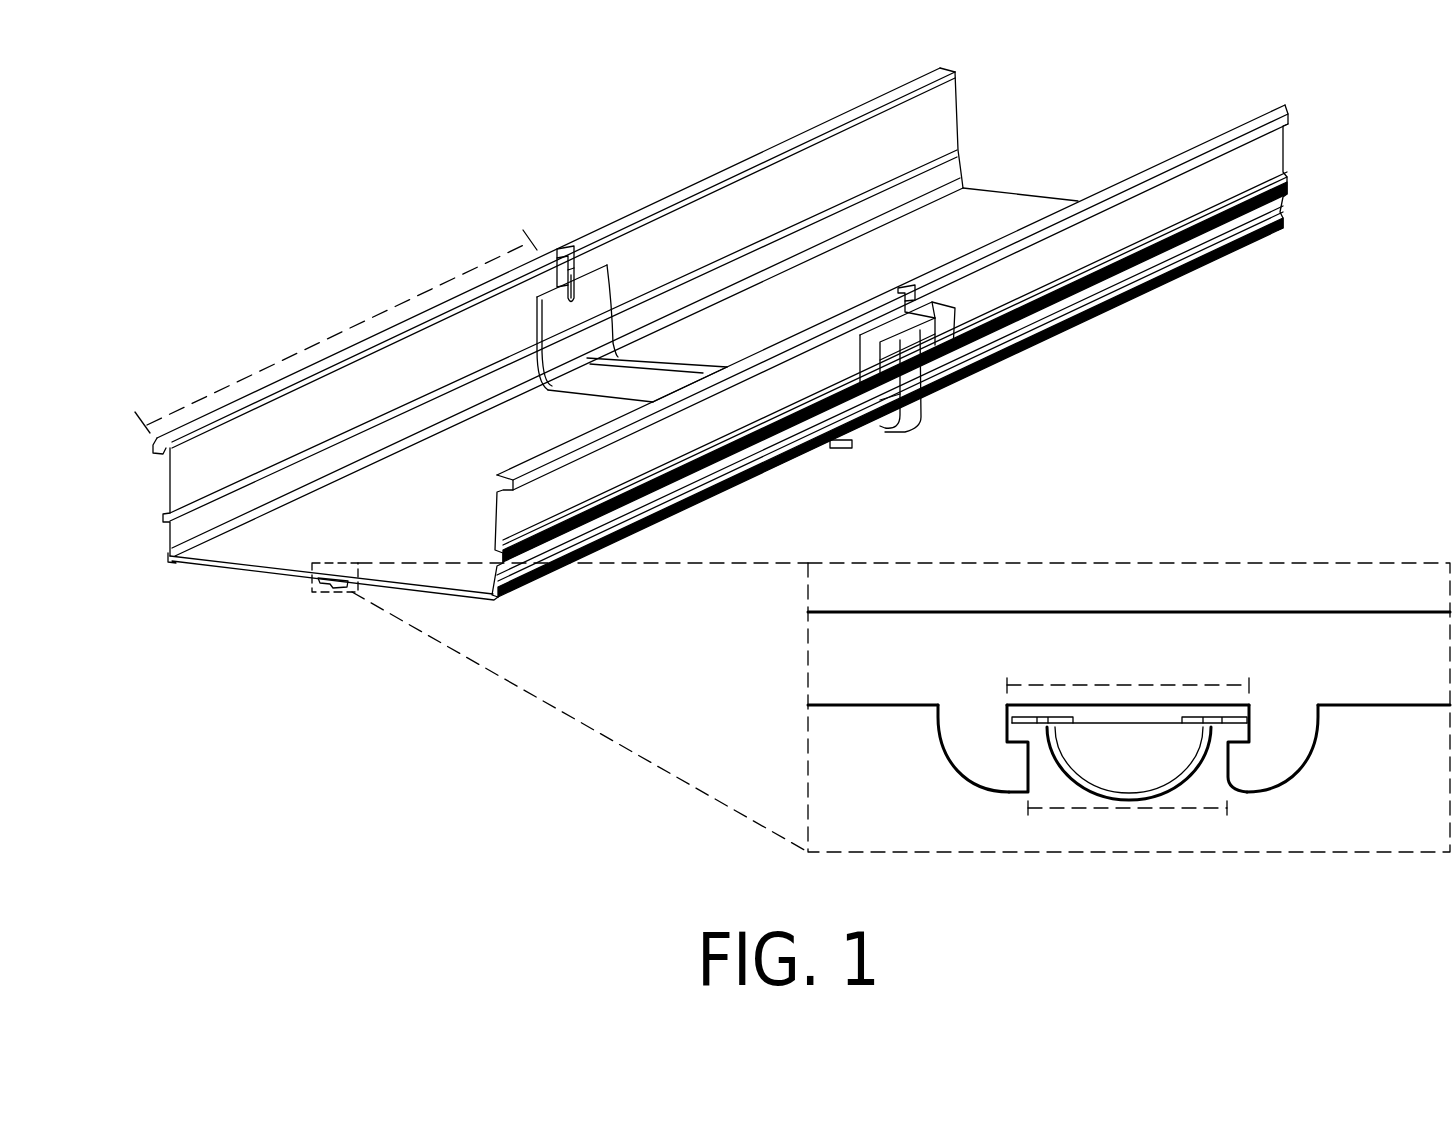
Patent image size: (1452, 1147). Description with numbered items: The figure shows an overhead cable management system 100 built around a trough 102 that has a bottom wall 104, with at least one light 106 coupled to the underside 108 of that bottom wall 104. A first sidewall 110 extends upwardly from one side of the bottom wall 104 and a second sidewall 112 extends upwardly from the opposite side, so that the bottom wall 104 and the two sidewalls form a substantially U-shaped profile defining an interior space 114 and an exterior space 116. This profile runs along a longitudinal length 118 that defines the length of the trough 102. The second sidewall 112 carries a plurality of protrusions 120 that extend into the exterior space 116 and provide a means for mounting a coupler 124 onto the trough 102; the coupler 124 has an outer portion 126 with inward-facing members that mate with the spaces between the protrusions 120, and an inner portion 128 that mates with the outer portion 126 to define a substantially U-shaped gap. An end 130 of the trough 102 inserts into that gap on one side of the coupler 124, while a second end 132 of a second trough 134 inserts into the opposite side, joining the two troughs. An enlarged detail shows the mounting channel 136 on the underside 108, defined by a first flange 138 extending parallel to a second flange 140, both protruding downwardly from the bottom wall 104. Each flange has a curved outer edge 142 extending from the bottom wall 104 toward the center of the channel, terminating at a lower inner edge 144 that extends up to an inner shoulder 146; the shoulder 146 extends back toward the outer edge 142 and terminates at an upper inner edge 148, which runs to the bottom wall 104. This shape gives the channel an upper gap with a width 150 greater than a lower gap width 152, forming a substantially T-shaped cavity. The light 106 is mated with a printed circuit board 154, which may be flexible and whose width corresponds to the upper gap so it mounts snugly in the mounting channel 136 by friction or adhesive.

The overhead cable management system 100 is at (192, 106).
The trough 102 is at (808, 470).
The bottom wall 104 is at (272, 540).
The light 106 is at (330, 588).
The underside 108 is at (843, 705).
The first sidewall 110 is at (186, 472).
The second sidewall 112 is at (583, 475).
The interior space 114 is at (461, 446).
The exterior space 116 is at (334, 677).
The longitudinal length 118 is at (330, 330).
The plurality of protrusions 120 is at (688, 470).
The coupler 124 is at (935, 436).
The outer portion 126 is at (943, 388).
The inner portion 128 is at (567, 322).
The end 130 is at (557, 250).
The second end 132 is at (565, 247).
The second trough 134 is at (812, 105).
The mounting channel 136 is at (1278, 500).
The first flange 138 is at (965, 732).
The second flange 140 is at (1288, 728).
The curved outer edge 142 is at (957, 768).
The lower inner edge 144 is at (1030, 762).
The inner shoulder 146 is at (1240, 790).
The upper inner edge 148 is at (1250, 733).
The width of upper gap 150 is at (1138, 684).
The lower gap width 152 is at (1127, 808).
The printed circuit board 154 is at (1165, 713).